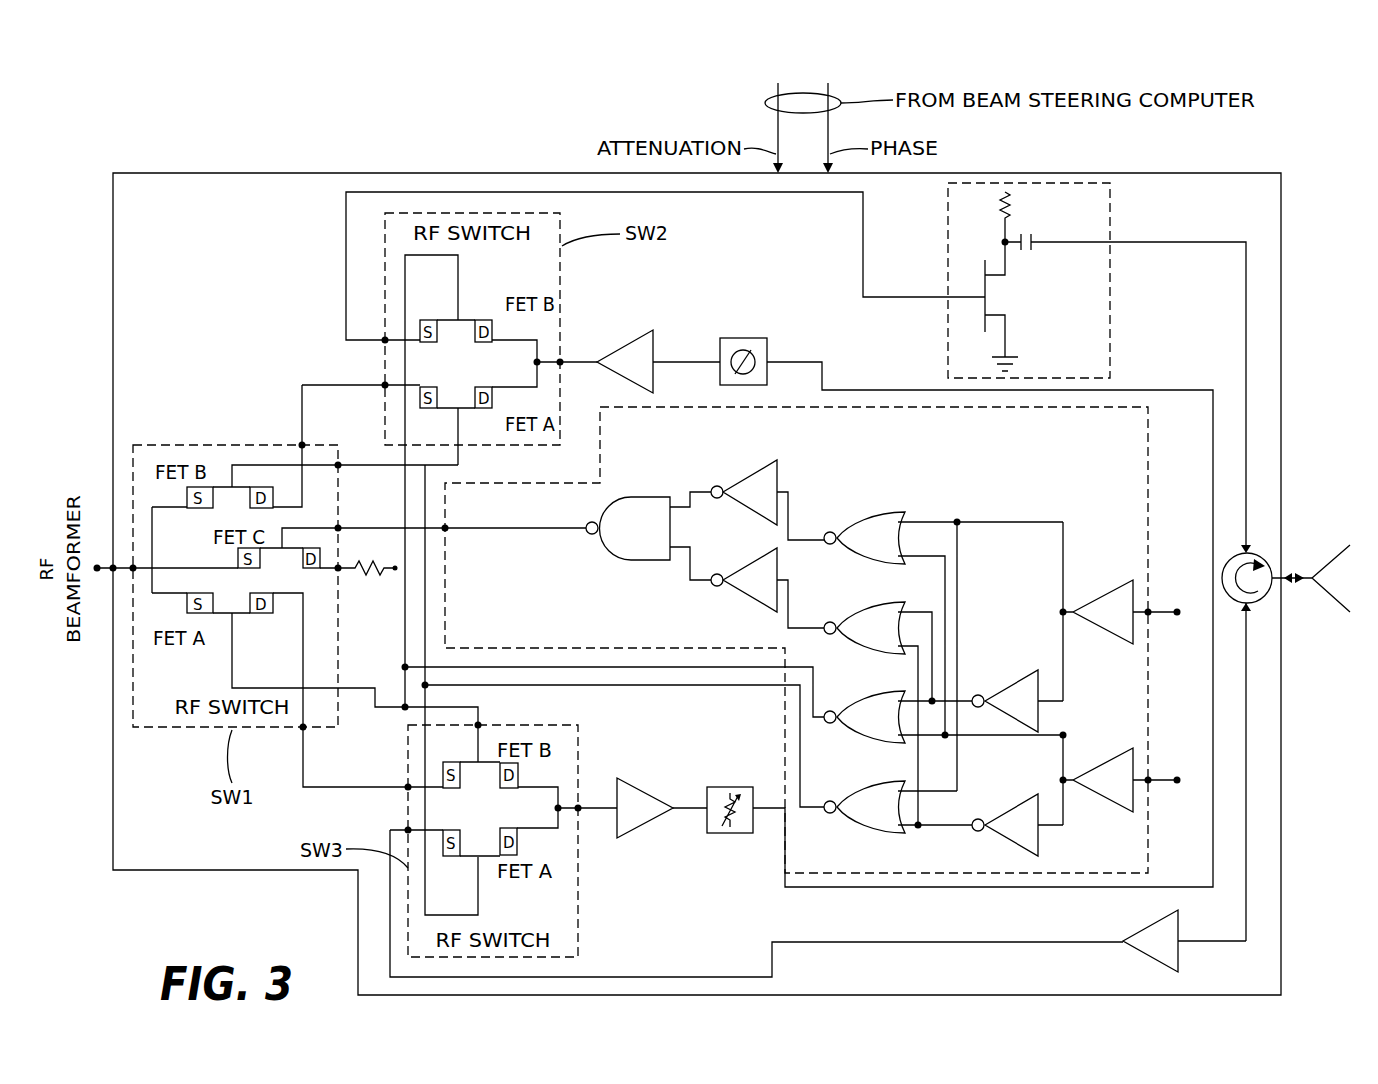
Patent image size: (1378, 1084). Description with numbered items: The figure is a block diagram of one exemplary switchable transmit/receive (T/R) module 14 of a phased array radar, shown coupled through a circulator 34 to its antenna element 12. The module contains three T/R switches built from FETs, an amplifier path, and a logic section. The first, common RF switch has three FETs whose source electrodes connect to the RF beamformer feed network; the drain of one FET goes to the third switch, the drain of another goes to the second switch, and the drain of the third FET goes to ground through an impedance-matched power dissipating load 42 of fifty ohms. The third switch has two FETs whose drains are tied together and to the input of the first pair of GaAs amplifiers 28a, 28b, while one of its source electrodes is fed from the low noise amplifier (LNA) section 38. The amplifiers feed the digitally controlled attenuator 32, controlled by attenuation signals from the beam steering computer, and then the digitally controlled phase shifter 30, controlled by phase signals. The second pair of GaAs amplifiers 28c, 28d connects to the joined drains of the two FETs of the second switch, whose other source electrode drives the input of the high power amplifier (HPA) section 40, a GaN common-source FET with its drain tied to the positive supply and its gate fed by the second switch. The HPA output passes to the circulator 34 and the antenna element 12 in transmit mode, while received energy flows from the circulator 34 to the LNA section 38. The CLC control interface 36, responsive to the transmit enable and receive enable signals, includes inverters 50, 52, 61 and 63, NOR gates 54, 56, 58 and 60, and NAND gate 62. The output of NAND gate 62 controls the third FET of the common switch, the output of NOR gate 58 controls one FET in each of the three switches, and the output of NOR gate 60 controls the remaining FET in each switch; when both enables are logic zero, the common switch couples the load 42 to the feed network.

The antenna element 12 is at (1321, 592).
The switchable transmit/receive (T/R) module 14 is at (220, 363).
The GaAs amplifier 28a is at (645, 835).
The GaAs amplifier 28b is at (646, 830).
The GaAs amplifier 28c is at (631, 332).
The GaAs amplifier 28d is at (626, 347).
The digitally controlled phase shifter 30 is at (743, 330).
The digitally controlled attenuator 32 is at (728, 779).
The circulator 34 is at (1254, 560).
The CLC control interface 36 is at (954, 496).
The low noise amplifier (LNA) section 38 is at (1149, 950).
The high power amplifier (HPA) section 40 is at (1074, 365).
The power dissipating load 42 is at (375, 574).
The inverter 50 is at (1009, 710).
The inverter 52 is at (1009, 834).
The NOR gate 54 is at (861, 547).
The NOR gate 56 is at (861, 637).
The NOR gate 58 is at (861, 726).
The NOR gate 60 is at (861, 816).
The inverter 61 is at (746, 501).
The NAND gate 62 is at (625, 537).
The inverter 63 is at (746, 589).